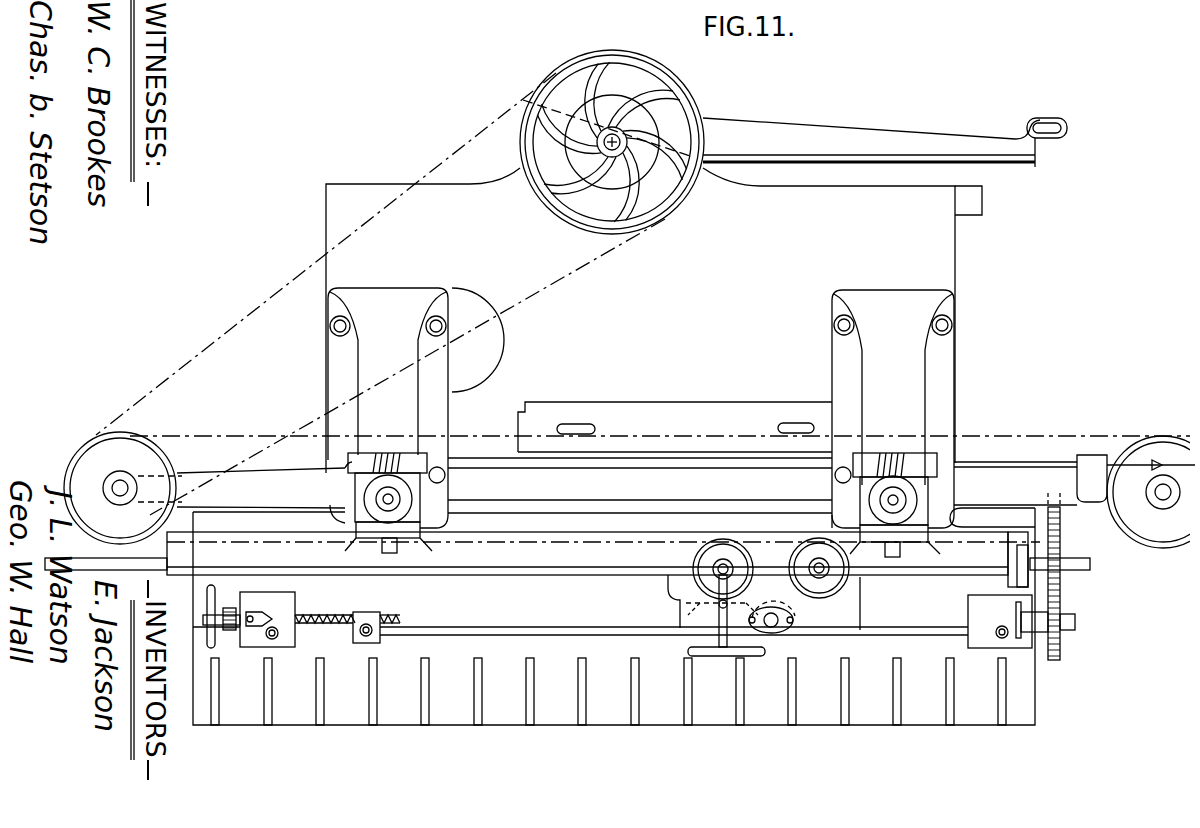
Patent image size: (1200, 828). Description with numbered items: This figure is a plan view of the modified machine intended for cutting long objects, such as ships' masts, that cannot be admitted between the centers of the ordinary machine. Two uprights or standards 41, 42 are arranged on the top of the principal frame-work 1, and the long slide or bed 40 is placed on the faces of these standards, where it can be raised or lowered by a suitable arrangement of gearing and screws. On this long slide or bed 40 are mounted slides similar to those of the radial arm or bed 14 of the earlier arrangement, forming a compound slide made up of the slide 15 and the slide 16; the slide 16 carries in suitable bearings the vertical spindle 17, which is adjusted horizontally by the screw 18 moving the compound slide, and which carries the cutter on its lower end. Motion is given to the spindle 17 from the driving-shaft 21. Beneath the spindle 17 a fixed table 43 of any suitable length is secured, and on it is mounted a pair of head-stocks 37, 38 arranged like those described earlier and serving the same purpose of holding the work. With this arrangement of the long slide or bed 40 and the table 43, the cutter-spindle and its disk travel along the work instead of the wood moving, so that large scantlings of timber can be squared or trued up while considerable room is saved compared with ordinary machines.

The principal frame-work 1 is at (688, 358).
The radial arm or bed 14 is at (885, 142).
The slide 15 is at (764, 584).
The slide 16 is at (724, 615).
The vertical spindle 17 is at (790, 620).
The screw 18 is at (578, 576).
The driving-shaft 21 is at (537, 95).
The head-stock 37 is at (727, 621).
The head-stock 38 is at (296, 616).
The long slide or bed 40 is at (587, 553).
The upright or standard 41 is at (416, 420).
The upright or standard 42 is at (893, 423).
The fixed table 43 is at (614, 616).